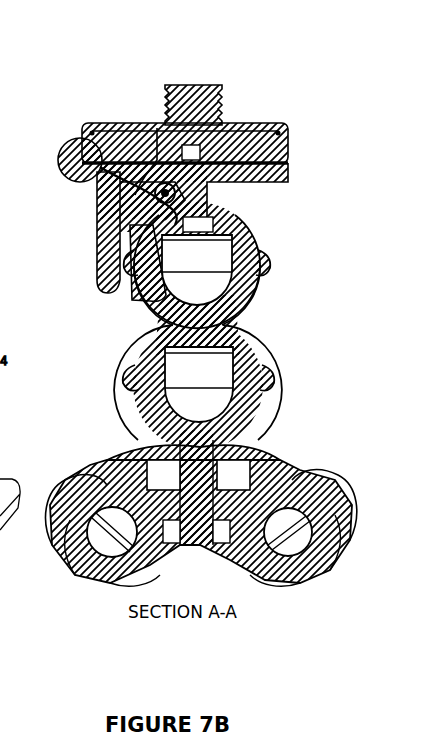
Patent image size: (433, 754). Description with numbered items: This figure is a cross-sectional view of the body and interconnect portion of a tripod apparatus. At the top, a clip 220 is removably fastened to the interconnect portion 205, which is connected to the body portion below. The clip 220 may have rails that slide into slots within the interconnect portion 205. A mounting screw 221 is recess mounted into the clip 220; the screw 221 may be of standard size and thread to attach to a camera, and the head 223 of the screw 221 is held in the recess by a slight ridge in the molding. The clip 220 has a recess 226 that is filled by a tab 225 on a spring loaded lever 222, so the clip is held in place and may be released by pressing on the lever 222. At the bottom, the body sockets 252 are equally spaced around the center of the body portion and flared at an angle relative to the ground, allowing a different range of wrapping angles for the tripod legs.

The mounting screw 221 is at (196, 85).
The clip 220 is at (288, 150).
The recess 226 is at (117, 125).
The head 223 is at (157, 128).
The tab 225 is at (86, 181).
The spring loaded lever 222 is at (100, 216).
The interconnect portion 205 is at (258, 222).
The body sockets 252 is at (292, 582).